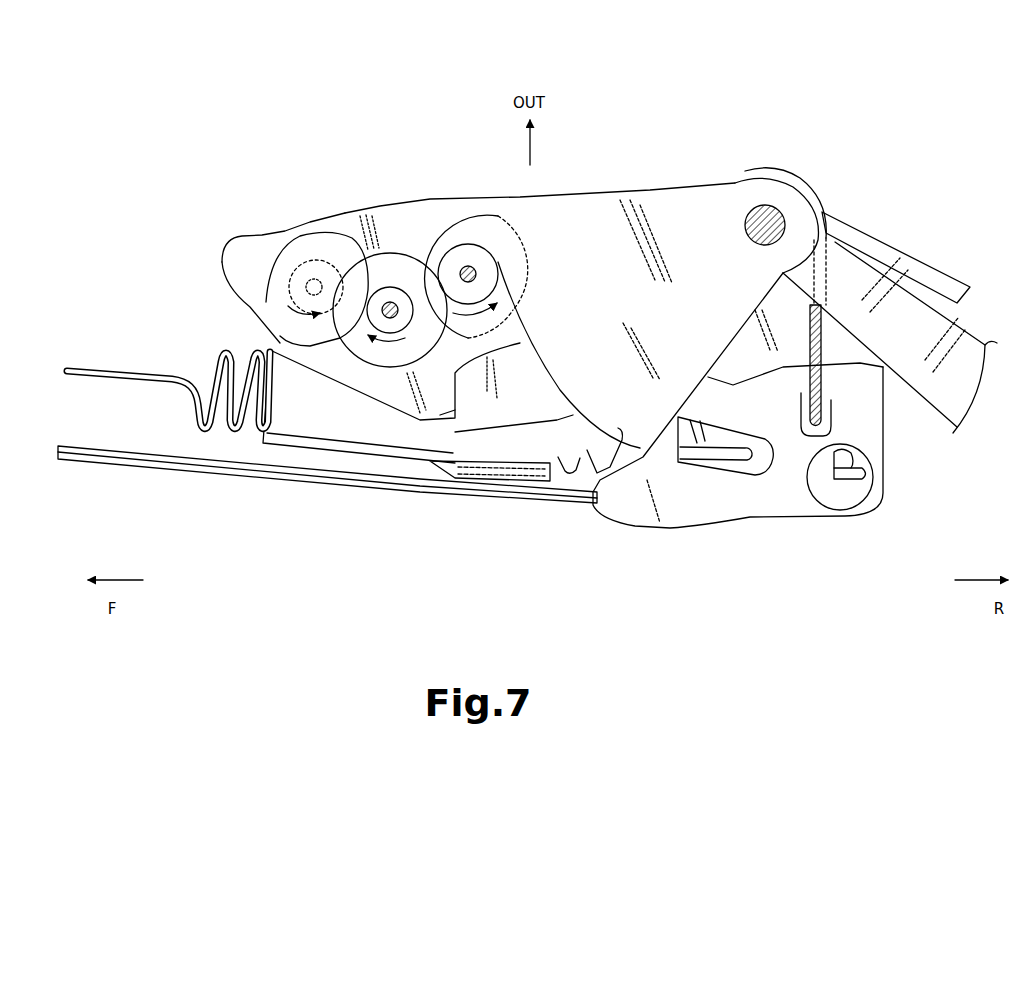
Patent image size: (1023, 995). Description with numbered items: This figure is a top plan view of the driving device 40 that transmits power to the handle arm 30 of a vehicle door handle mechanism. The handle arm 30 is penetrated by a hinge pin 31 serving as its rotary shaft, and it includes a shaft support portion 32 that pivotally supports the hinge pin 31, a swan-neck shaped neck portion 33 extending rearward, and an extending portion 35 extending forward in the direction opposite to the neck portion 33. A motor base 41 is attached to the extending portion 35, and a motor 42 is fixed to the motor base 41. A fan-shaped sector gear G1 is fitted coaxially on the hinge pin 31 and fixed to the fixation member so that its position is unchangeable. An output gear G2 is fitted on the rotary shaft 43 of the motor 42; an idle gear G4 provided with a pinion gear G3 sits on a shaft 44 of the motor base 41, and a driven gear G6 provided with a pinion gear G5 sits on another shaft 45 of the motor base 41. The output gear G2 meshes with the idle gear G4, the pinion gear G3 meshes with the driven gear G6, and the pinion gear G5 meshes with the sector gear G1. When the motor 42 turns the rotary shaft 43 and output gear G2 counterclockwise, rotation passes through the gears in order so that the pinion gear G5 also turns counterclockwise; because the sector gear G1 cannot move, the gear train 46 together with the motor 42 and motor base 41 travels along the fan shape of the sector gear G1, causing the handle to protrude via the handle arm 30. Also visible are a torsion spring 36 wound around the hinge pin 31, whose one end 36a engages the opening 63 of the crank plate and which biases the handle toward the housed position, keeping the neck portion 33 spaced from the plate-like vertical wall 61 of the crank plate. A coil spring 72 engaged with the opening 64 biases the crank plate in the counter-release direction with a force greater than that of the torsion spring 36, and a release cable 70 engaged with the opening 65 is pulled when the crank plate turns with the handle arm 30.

The handle arm 30 is at (972, 322).
The hinge pin 31 is at (755, 214).
The shaft support portion 32 is at (800, 191).
The neck portion 33 is at (941, 406).
The extending portion 35 is at (485, 458).
The torsion spring 36 is at (769, 171).
The one end of torsion spring 36a is at (823, 412).
The driving device 40 is at (360, 196).
The motor base 41 is at (463, 196).
The motor 42 is at (298, 237).
The rotary shaft 43 is at (262, 297).
The shaft 44 is at (388, 301).
The shaft 45 is at (470, 266).
The gear train 46 is at (334, 348).
The vertical wall 61 is at (912, 250).
The opening 63 is at (808, 436).
The opening 64 is at (733, 472).
The opening 65 is at (852, 491).
The release cable 70 is at (152, 455).
The coil spring 72 is at (177, 378).
The sector gear G1 is at (654, 205).
The output gear G2 is at (312, 262).
The pinion gear G3 is at (412, 368).
The idle gear G4 is at (347, 366).
The pinion gear G5 is at (440, 250).
The driven gear G6 is at (416, 240).